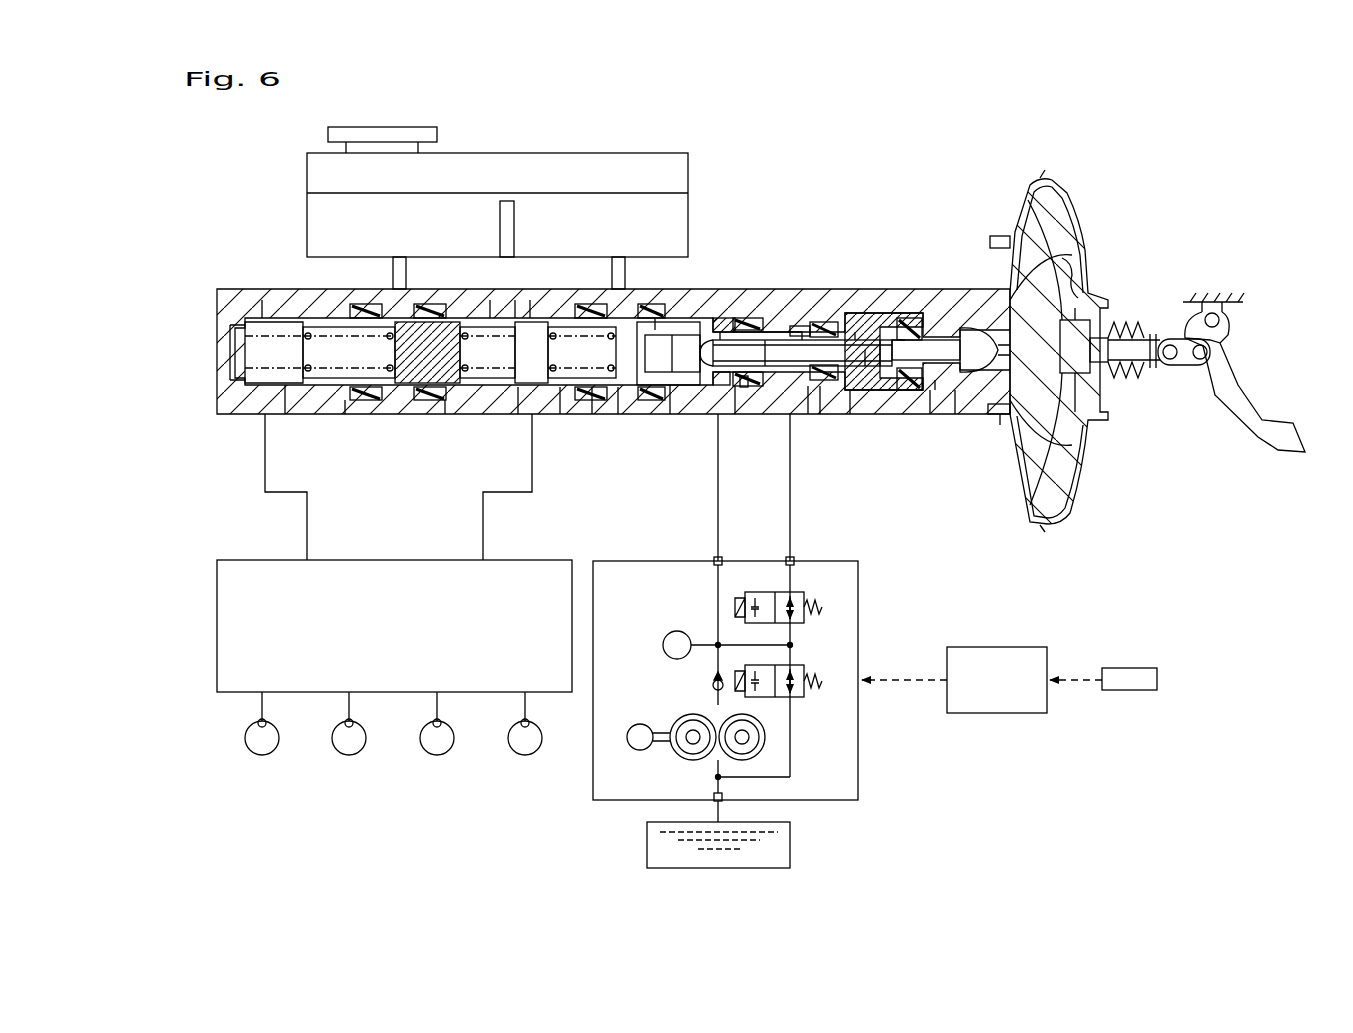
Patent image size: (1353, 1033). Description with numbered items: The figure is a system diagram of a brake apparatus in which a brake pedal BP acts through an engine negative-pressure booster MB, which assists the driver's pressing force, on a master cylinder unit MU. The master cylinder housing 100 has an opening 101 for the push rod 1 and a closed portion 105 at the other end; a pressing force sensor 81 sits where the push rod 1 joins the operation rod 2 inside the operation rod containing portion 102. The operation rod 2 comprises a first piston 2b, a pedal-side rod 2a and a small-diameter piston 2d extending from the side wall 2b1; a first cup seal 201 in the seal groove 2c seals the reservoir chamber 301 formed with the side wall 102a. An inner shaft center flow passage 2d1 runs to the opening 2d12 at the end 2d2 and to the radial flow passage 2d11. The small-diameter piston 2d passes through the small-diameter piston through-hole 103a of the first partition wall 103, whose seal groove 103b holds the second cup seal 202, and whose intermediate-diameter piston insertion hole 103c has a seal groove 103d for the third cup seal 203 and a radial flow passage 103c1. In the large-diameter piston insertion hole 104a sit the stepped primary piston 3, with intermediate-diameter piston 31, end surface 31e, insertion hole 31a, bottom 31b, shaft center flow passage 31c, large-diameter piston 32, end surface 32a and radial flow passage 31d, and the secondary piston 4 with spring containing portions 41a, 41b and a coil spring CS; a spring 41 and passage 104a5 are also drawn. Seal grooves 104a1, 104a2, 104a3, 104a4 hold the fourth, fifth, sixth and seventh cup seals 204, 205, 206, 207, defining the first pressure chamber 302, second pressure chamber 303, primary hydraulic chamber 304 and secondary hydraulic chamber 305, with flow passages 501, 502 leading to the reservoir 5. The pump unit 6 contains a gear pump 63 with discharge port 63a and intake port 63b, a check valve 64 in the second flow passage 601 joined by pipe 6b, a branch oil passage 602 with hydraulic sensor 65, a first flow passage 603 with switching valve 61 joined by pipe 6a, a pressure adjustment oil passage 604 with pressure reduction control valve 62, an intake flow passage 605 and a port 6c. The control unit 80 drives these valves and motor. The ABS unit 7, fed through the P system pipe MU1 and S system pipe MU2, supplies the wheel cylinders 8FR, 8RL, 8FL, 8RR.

The push rod 1 is at (1088, 302).
The operation rod 2 is at (1070, 442).
The pedal-side rod 2a is at (965, 290).
The first piston 2b is at (955, 290).
The side wall of the first piston 2b1 is at (935, 420).
The seal groove 2c is at (930, 290).
The small-diameter piston 2d is at (898, 290).
The small-diameter piston inner shaft center flow passage 2d1 is at (880, 290).
The radial flow passage 2d11 is at (905, 290).
The end 2d2 is at (705, 290).
The opening 2d12 is at (672, 420).
The stepped primary piston 3 is at (718, 290).
The secondary piston 4 is at (325, 420).
The reservoir 5 is at (570, 150).
The pump unit 6 is at (862, 576).
The pipe 6a is at (858, 546).
The pipe 6b is at (712, 560).
The suction port 6c is at (725, 808).
The ABS unit 7 is at (395, 558).
The front right wheel cylinder 8FR is at (252, 757).
The rear left wheel cylinder 8RL is at (339, 757).
The front left wheel cylinder 8FL is at (427, 757).
The rear right wheel cylinder 8RR is at (515, 757).
The intermediate-diameter piston 31 is at (762, 420).
The insertion hole 31a is at (820, 420).
The bottom of the insertion hole 31b is at (670, 420).
The large-diameter piston inner shaft center flow passage 31c is at (592, 420).
The radial flow passage 31d is at (657, 305).
The intermediate-diameter doughnut-shaped end surface 31e is at (855, 290).
The large-diameter piston 32 is at (700, 290).
The large-diameter doughnut-shaped end surface 32a is at (722, 290).
The spring 41 is at (435, 420).
The spring containing portion 41a is at (470, 420).
The spring containing portion 41b is at (310, 420).
The switching valve 61 is at (812, 592).
The pressure reduction control valve 62 is at (812, 665).
The gear pump 63 is at (668, 714).
The discharge port 63a is at (715, 702).
The intake port 63b is at (715, 762).
The check valve 64 is at (712, 684).
The hydraulic sensor 65 is at (668, 634).
The control unit 80 is at (1028, 647).
The pressing force sensor 81 is at (1085, 438).
The master cylinder housing 100 is at (1003, 288).
The opening 101 is at (1098, 380).
The operation rod containing portion 102 is at (1070, 262).
The side wall 102a is at (865, 290).
The first partition wall 103 is at (835, 290).
The small-diameter piston through-hole 103a is at (870, 420).
The seal groove 103b is at (860, 420).
The intermediate-diameter piston insertion hole 103c is at (785, 290).
The first pressure chamber radial flow passage 103c1 is at (800, 290).
The seal groove 103d is at (742, 420).
The large-diameter piston insertion hole 104a is at (522, 300).
The seal groove / second pressure chamber radial flow passage 104a1 is at (742, 305).
The seal groove / primary radial flow passage 104a2 is at (505, 420).
The seal groove / secondary radial flow passage 104a3 is at (380, 420).
The seal groove 104a4 is at (320, 300).
The port 104a5 is at (407, 290).
The closed portion 105 is at (250, 320).
The first cup seal 201 is at (960, 420).
The second cup seal 202 is at (850, 420).
The third cup seal 203 is at (770, 290).
The fourth cup seal 204 is at (618, 420).
The fifth cup seal 205 is at (560, 420).
The sixth cup seal 206 is at (445, 420).
The seventh cup seal 207 is at (345, 420).
The reservoir chamber 301 is at (930, 420).
The first pressure chamber 302 is at (808, 420).
The second pressure chamber 303 is at (735, 420).
The primary hydraulic chamber 304 is at (518, 420).
The secondary hydraulic chamber 305 is at (285, 420).
The flow passage 501 is at (612, 270).
The flow passage 502 is at (393, 270).
The second flow passage 601 is at (716, 612).
The branch oil passage 602 is at (770, 645).
The first flow passage 603 is at (796, 566).
The pressure adjustment oil passage 604 is at (790, 718).
The intake flow passage 605 is at (715, 786).
The coil spring CS is at (262, 300).
The master cylinder unit MU is at (1000, 428).
The P system pipe MU1 is at (480, 520).
The S system pipe MU2 is at (310, 540).
The engine negative-pressure booster MB is at (1078, 192).
The brake pedal BP is at (1278, 418).